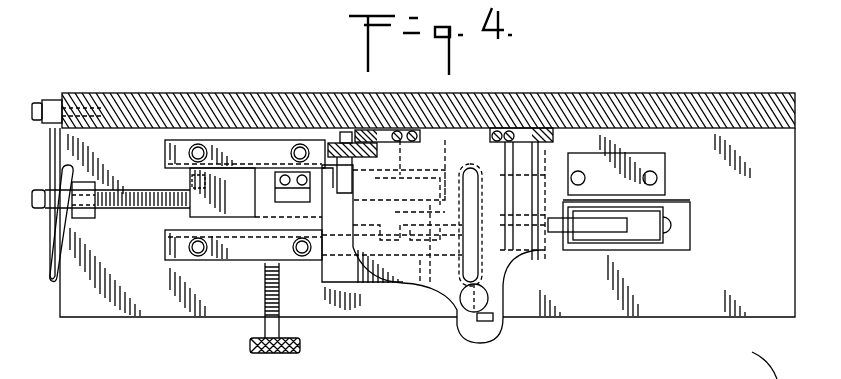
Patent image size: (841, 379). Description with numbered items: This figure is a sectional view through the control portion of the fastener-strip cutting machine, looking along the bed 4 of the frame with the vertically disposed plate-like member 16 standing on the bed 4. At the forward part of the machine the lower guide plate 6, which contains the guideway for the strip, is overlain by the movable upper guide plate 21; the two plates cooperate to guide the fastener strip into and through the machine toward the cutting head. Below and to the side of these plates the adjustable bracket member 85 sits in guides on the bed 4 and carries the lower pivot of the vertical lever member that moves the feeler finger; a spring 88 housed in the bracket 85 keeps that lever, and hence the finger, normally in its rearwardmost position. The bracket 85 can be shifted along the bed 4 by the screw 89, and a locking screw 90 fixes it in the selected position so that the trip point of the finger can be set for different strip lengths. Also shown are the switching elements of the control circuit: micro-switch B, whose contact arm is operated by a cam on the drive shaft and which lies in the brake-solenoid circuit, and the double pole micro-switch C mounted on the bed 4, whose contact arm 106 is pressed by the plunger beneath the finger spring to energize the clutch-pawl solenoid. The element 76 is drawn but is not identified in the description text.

The bed 4 is at (682, 305).
The vertically disposed plate-like member 16 is at (702, 105).
The screw 89 is at (119, 205).
The adjustable bracket member 85 is at (248, 202).
The locking screw 90 is at (263, 328).
The spring 88 is at (287, 263).
The lower guide plate 6 is at (348, 272).
The movable upper guide plate 21 is at (412, 270).
The micro-switch B is at (470, 170).
The plate 76 is at (550, 220).
The double pole micro-switch C is at (658, 217).
The contact arm 106 is at (580, 225).